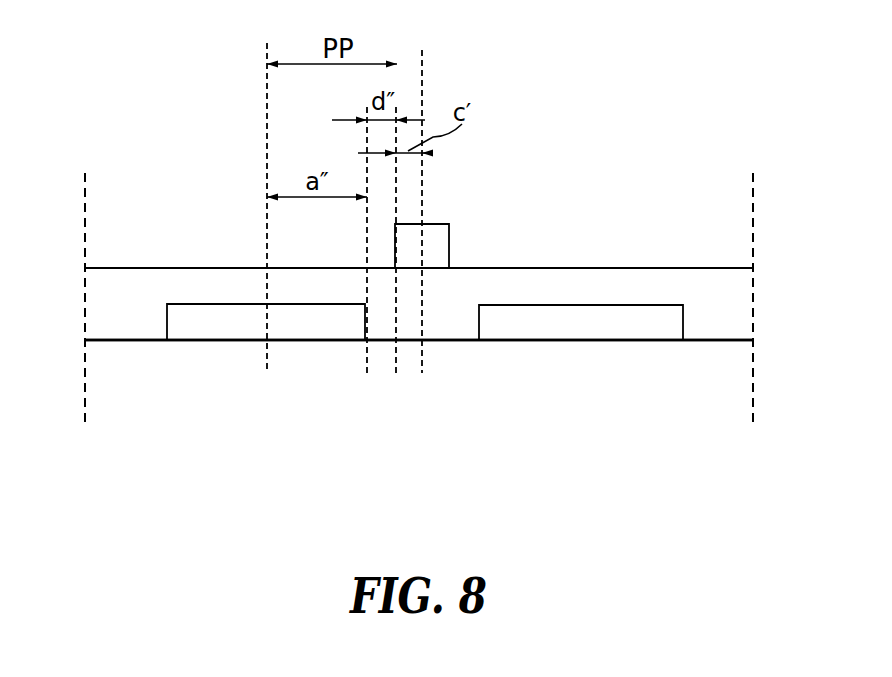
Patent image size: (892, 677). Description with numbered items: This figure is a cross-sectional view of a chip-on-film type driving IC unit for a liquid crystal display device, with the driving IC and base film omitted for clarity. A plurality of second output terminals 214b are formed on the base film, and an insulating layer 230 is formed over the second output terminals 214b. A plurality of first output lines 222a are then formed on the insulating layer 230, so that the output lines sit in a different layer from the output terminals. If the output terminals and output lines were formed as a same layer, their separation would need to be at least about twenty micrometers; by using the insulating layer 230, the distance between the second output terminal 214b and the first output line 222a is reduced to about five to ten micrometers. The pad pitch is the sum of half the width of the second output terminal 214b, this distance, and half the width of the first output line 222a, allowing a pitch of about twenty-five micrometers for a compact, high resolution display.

The first output line 222a is at (405, 243).
The second output terminal 214b is at (315, 328).
The insulating layer 230 is at (143, 325).